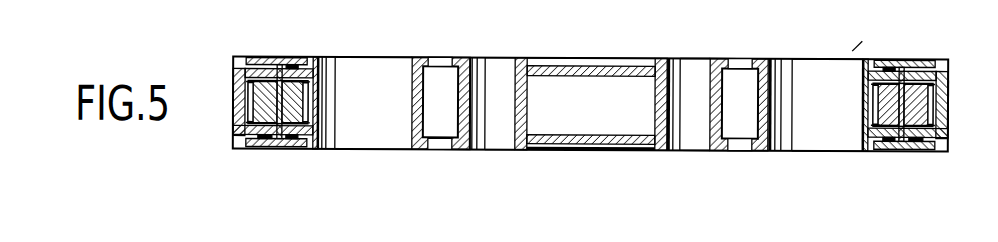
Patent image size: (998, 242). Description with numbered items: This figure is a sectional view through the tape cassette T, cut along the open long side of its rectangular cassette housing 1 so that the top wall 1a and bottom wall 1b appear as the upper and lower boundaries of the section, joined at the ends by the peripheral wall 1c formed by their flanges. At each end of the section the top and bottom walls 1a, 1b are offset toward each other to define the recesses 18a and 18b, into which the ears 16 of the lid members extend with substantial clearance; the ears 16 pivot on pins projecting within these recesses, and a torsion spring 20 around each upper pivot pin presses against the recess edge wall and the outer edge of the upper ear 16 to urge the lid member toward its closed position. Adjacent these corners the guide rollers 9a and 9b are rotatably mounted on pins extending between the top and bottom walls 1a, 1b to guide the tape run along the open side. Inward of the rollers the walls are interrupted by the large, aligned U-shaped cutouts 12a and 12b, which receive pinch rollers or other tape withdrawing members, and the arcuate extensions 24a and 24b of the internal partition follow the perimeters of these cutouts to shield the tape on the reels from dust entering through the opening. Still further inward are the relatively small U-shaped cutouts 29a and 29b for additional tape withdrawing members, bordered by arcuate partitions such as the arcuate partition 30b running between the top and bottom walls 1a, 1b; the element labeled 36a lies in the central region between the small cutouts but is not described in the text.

The cassette housing 1 is at (826, 45).
The tape cassette T is at (850, 47).
The top wall 1a is at (586, 53).
The bottom wall 1b is at (598, 150).
The peripheral wall 1c is at (949, 83).
The guide roller 9a is at (262, 97).
The guide roller 9b is at (918, 107).
The cutout 12a is at (380, 135).
The cutout 12b is at (818, 133).
The ear 16 is at (267, 58).
The recess 18a is at (238, 59).
The recess 18b is at (235, 141).
The torsion spring 20 is at (262, 139).
The arcuate extension 24a is at (412, 79).
The arcuate extension 24b is at (770, 74).
The small cutout 29a is at (496, 138).
The small cutout 29b is at (692, 130).
The arcuate partition 30b is at (696, 51).
The left end wall of inner tube 36a is at (521, 74).